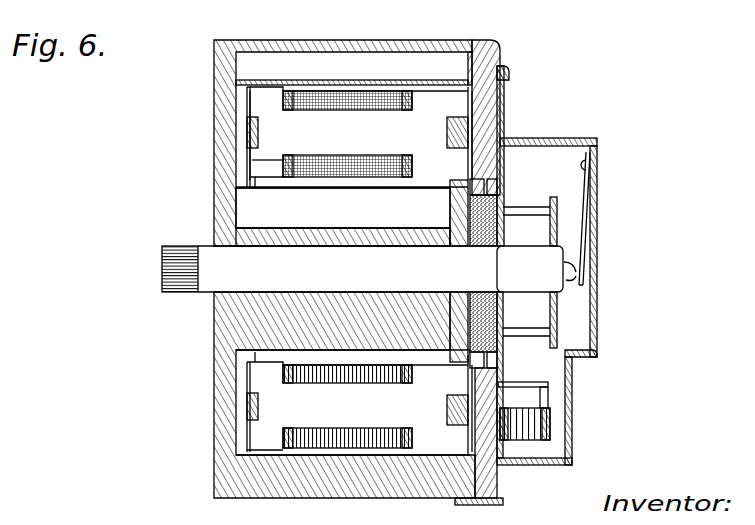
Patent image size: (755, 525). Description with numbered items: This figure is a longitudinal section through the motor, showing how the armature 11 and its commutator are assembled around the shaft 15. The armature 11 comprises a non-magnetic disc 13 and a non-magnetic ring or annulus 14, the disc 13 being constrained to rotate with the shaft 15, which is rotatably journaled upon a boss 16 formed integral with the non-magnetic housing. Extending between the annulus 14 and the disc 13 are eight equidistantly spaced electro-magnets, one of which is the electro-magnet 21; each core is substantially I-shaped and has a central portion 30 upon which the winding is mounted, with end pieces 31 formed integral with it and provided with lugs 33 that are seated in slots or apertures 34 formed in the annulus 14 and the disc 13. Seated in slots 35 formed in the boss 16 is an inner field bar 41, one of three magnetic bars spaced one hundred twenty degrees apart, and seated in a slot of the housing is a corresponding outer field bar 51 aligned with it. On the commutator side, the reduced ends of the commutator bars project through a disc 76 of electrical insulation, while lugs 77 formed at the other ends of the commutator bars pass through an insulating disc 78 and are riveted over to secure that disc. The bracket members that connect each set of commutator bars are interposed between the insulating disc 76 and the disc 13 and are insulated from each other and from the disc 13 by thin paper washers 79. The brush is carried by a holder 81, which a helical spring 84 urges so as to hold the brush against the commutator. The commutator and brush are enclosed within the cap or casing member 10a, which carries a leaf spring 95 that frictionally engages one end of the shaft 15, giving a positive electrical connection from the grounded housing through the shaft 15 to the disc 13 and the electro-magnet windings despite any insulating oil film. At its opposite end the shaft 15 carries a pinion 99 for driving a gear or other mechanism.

The cap or casing member 10a is at (594, 142).
The armature 11 is at (313, 452).
The disc 13 is at (454, 198).
The ring or annulus 14 is at (248, 123).
The shaft 15 is at (271, 254).
The boss 16 is at (383, 310).
The electro-magnet 21 is at (499, 86).
The central portion of core 30 is at (316, 90).
The end pieces 31 is at (428, 97).
The lugs 33 is at (255, 163).
The slots or apertures 34 is at (248, 140).
The slots 35 is at (365, 228).
The inner field bar 41 is at (247, 204).
The outer field bar 51 is at (363, 60).
The insulating disc 76 is at (498, 193).
The lugs 77 is at (562, 204).
The insulating disc 78 is at (548, 240).
The washers 79 is at (483, 250).
The holder 81 is at (552, 436).
The helical spring 84 is at (546, 403).
The leaf spring 95 is at (577, 282).
The pinion 99 is at (184, 244).